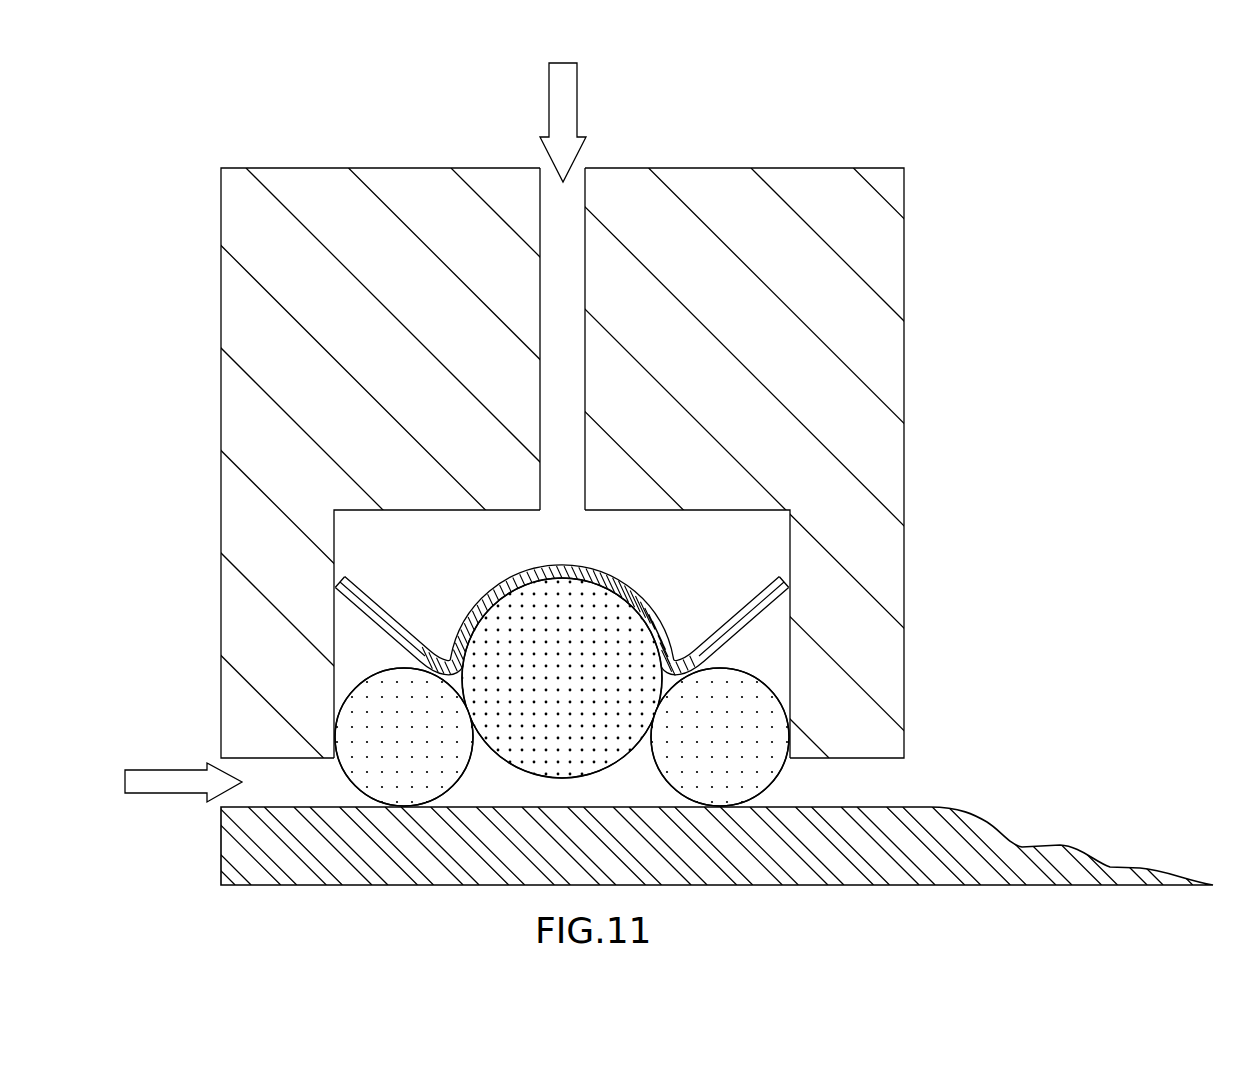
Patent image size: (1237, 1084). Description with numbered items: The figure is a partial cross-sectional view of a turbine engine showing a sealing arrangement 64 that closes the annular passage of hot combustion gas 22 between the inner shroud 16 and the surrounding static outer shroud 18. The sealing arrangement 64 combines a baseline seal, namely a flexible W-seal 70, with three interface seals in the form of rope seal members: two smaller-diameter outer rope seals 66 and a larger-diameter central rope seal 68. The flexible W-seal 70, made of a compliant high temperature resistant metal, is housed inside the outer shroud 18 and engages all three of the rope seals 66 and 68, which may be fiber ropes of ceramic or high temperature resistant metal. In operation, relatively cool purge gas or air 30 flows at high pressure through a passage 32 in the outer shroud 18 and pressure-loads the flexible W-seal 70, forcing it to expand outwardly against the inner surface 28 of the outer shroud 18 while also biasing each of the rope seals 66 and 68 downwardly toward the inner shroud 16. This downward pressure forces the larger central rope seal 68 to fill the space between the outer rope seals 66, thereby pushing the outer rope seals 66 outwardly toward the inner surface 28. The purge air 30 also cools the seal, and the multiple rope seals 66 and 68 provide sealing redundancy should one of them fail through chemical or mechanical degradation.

The inner shroud 16 is at (313, 885).
The outer shroud 18 is at (893, 367).
The hot combustion gas 22 is at (178, 796).
The inner surface 28 is at (334, 548).
The purge gas or air 30 is at (577, 100).
The passage 32 is at (558, 298).
The sealing arrangement 64 is at (1068, 176).
The outer rope seals 66 is at (358, 787).
The central rope seal 68 is at (593, 775).
The flexible W-seal 70 is at (638, 578).